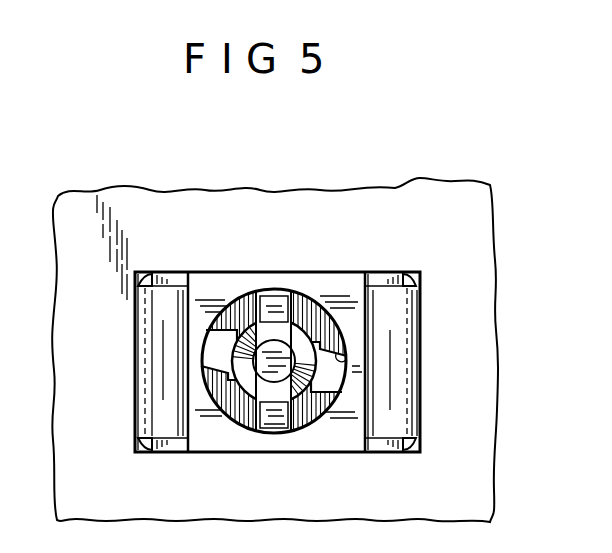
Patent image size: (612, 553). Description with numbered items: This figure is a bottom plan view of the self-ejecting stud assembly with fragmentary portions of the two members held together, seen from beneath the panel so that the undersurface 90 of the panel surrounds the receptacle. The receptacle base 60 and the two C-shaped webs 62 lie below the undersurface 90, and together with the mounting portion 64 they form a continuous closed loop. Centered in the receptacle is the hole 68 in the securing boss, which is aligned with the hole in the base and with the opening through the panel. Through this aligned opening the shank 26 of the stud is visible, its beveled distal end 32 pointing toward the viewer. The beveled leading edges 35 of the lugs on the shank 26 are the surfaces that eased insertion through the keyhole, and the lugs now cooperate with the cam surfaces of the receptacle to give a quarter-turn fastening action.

The shank 26 is at (233, 296).
The distal end 32 is at (266, 370).
The leading edge 35 is at (271, 298).
The receptacle base 60 is at (187, 392).
The C-shaped web 62 is at (135, 353).
The mounting portion 64 is at (338, 377).
The hole 68 is at (344, 358).
The undersurface 90 is at (447, 229).